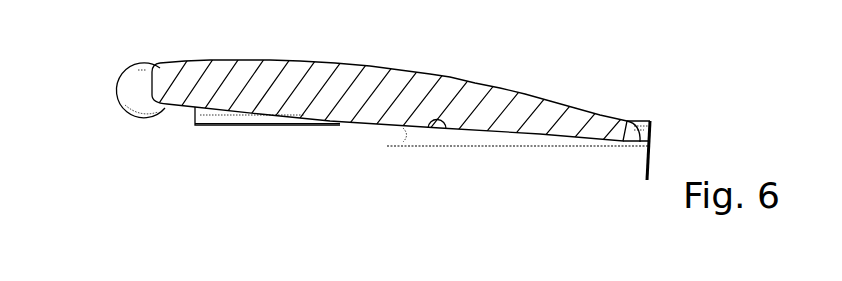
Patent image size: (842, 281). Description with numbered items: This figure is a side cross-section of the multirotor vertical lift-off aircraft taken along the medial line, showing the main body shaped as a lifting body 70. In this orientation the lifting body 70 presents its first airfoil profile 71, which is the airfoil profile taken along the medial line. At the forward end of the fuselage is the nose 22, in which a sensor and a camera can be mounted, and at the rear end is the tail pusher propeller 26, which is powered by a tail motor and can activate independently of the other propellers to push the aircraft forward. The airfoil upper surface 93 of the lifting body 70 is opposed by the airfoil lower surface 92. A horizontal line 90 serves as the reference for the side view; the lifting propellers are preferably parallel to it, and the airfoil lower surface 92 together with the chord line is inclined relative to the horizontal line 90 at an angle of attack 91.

The nose 22 is at (149, 62).
The tail pusher propeller 26 is at (654, 167).
The lifting body 70 is at (408, 79).
The first airfoil profile 71 is at (407, 69).
The horizontal line 90 is at (517, 148).
The angle of attack 91 is at (402, 139).
The airfoil lower surface 92 is at (434, 121).
The airfoil upper surface 93 is at (273, 62).